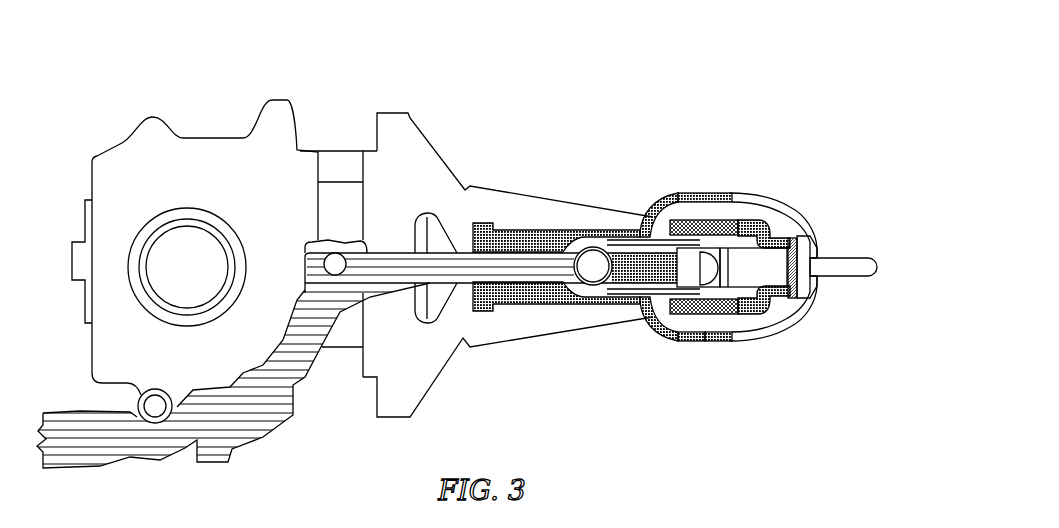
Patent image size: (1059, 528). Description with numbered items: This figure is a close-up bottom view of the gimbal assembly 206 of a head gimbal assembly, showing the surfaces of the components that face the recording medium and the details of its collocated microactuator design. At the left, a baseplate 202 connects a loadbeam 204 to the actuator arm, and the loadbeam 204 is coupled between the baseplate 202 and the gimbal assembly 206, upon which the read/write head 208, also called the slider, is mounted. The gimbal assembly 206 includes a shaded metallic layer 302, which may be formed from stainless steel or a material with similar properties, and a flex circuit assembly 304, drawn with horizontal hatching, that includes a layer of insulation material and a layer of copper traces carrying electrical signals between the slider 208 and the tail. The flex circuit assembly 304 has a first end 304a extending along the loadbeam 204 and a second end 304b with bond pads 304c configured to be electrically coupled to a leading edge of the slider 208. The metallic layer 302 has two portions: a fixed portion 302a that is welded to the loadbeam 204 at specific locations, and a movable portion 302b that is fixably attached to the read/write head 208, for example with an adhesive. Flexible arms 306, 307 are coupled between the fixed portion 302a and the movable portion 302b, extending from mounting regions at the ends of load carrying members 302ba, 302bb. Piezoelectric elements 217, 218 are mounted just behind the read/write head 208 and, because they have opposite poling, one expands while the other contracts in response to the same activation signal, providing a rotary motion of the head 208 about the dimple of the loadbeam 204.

The baseplate 202 is at (224, 231).
The loadbeam 204 is at (508, 265).
The gimbal assembly 206 is at (742, 219).
The read/write head 208 is at (753, 267).
The piezoelectric element 217 is at (697, 170).
The piezoelectric element 218 is at (681, 360).
The metallic layer 302 is at (707, 291).
The fixed portion 302a is at (556, 306).
The movable portion 302b is at (776, 302).
The load carrying member 302ba is at (729, 186).
The load carrying member 302bb is at (727, 349).
The flex circuit assembly 304 is at (237, 404).
The first end 304a is at (491, 302).
The second end 304b is at (804, 252).
The bond pads 304c is at (833, 252).
The flexible arm 306 is at (652, 228).
The flexible arm 307 is at (713, 382).